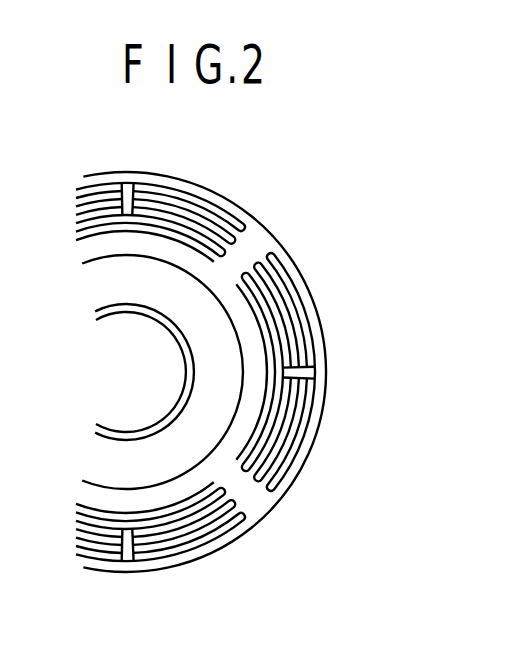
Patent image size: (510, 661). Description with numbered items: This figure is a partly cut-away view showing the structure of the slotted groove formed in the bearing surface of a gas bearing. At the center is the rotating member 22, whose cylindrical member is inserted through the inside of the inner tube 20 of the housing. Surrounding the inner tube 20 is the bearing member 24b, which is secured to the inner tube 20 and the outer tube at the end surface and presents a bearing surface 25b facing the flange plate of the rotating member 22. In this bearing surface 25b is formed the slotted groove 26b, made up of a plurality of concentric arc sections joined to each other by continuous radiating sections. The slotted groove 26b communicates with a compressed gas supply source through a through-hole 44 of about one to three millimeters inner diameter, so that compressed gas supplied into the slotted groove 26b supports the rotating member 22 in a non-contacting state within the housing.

The inner tube 20 is at (197, 267).
The rotating member 22 is at (160, 322).
The bearing member 24b is at (396, 479).
The bearing surface 25b is at (256, 497).
The slotted groove 26b is at (250, 230).
The through-hole 44 is at (129, 196).